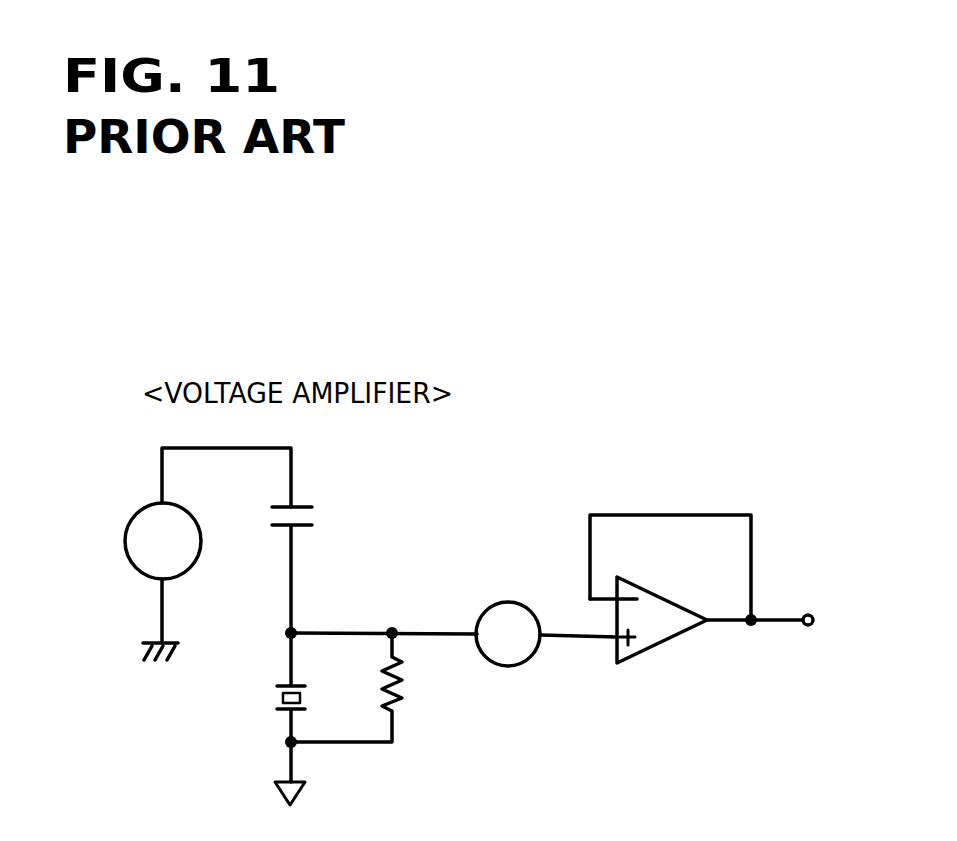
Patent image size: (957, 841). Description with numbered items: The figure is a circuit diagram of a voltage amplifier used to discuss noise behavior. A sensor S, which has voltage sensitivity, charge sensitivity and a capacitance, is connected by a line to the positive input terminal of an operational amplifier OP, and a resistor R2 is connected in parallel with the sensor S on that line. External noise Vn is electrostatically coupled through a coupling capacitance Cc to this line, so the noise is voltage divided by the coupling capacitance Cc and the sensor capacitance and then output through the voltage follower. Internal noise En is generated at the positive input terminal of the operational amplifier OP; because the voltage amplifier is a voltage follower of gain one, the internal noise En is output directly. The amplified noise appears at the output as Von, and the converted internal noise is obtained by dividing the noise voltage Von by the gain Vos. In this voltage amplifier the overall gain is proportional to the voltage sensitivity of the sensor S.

The external noise Vn is at (163, 581).
The coupling capacitance Cc is at (268, 565).
The sensor S is at (265, 719).
The resistor R2 is at (370, 687).
The internal noise En is at (508, 634).
The operational amplifier OP is at (696, 589).
The output noise voltage Von is at (843, 606).
The G gain Vos is at (843, 635).